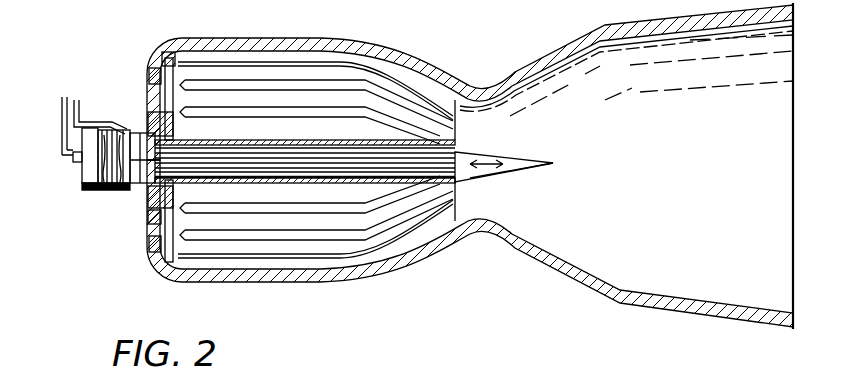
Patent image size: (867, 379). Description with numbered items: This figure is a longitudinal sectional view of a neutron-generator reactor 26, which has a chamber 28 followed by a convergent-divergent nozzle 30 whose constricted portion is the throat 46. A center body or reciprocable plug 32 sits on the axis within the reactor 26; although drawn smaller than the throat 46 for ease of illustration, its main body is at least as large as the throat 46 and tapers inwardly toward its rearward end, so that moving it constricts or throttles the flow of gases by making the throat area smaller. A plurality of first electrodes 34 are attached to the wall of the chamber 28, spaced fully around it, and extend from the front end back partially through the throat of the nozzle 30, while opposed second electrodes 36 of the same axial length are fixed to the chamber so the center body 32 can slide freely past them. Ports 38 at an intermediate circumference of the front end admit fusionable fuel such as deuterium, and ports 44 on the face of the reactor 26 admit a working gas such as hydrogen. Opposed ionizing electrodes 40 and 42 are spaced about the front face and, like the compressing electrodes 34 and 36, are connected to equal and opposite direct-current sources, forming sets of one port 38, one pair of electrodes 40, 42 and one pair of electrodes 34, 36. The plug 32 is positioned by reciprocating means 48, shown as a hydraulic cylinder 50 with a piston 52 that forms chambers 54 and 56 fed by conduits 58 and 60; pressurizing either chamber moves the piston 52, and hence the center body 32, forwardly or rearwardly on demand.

The reactor 26 is at (500, 252).
The chamber 28 is at (258, 103).
The convergent-divergent nozzle 30 is at (690, 117).
The center body or reciprocable plug 32 is at (520, 170).
The first electrodes 34 is at (358, 52).
The second electrodes 36 is at (228, 140).
The ports 38 is at (148, 218).
The ionizing electrode 40 is at (163, 133).
The ionizing electrode 42 is at (157, 68).
The ports 44 is at (165, 60).
The throat 46 is at (485, 115).
The reciprocating means 48 is at (62, 147).
The hydraulic cylinder 50 is at (88, 140).
The piston 52 is at (385, 168).
The chamber 54 is at (97, 168).
The chamber 56 is at (144, 158).
The conduit 58 is at (64, 97).
The conduit 60 is at (77, 100).